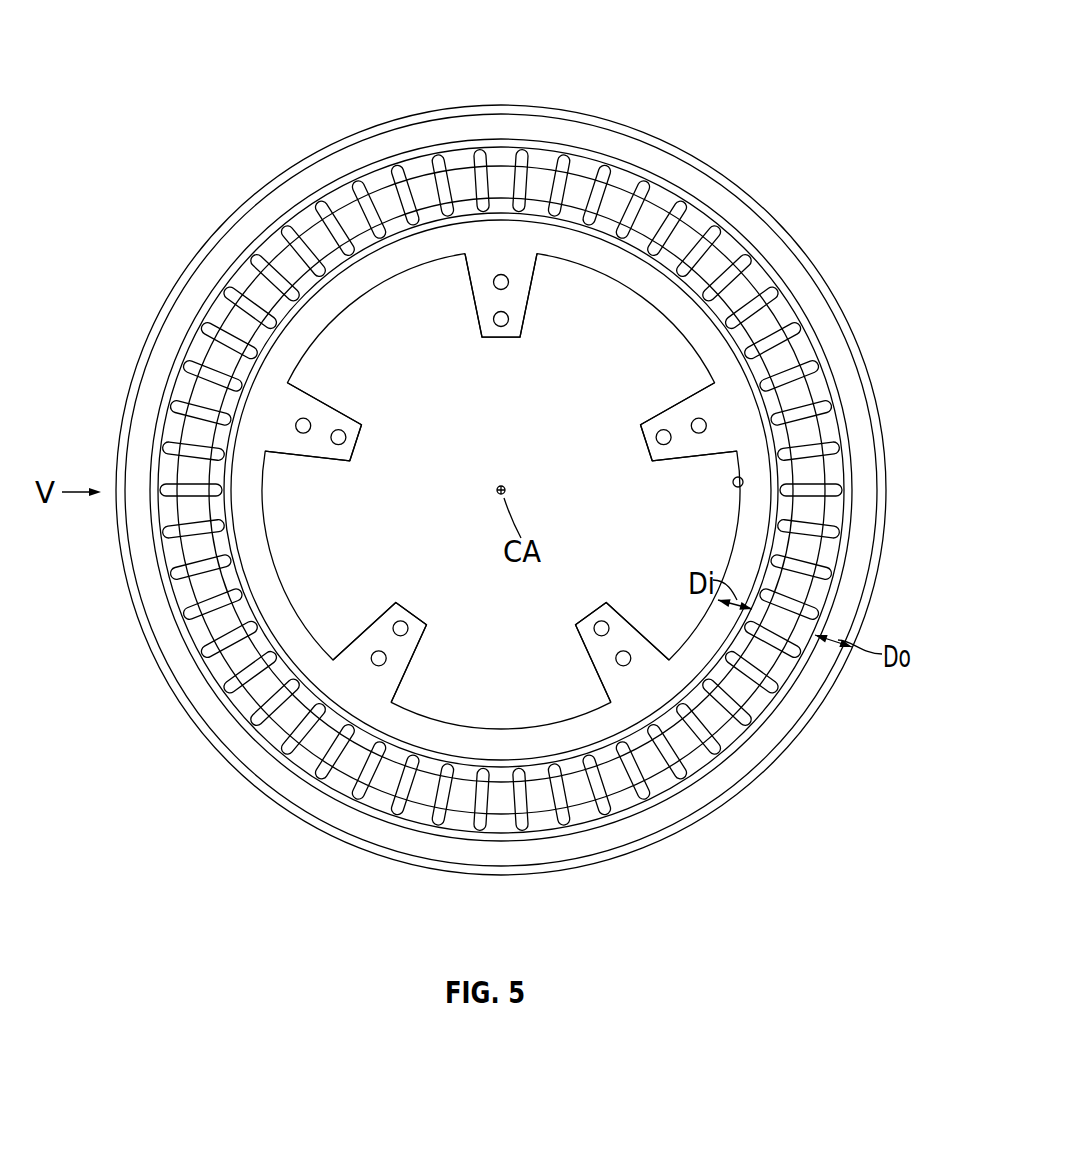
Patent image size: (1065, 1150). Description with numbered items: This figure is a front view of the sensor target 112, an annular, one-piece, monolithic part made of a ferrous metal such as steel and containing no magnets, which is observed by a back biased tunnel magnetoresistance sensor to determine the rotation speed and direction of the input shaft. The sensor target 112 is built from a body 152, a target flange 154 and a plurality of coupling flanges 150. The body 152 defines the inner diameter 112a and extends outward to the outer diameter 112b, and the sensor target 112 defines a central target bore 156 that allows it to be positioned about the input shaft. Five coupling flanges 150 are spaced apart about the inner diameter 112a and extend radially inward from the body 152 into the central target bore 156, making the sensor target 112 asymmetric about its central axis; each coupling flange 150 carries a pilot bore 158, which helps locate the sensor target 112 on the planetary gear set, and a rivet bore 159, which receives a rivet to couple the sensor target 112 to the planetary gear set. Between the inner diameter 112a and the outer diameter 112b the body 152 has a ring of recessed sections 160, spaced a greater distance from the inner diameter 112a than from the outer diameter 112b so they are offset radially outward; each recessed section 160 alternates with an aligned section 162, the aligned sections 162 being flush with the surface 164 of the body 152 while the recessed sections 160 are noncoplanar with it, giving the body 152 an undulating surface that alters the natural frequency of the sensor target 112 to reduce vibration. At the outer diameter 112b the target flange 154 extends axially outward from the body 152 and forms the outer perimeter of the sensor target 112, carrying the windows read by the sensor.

The sensor target 112 is at (850, 106).
The inner diameter 112a is at (742, 492).
The outer diameter 112b is at (800, 244).
The coupling flange 150 is at (504, 346).
The body 152 is at (884, 524).
The target flange 154 is at (866, 347).
The central target bore 156 is at (703, 537).
The pilot bore 158 is at (509, 322).
The rivet bore 159 is at (509, 285).
The recessed section 160 is at (500, 175).
The aligned section 162 is at (540, 182).
The surface 164 is at (819, 308).